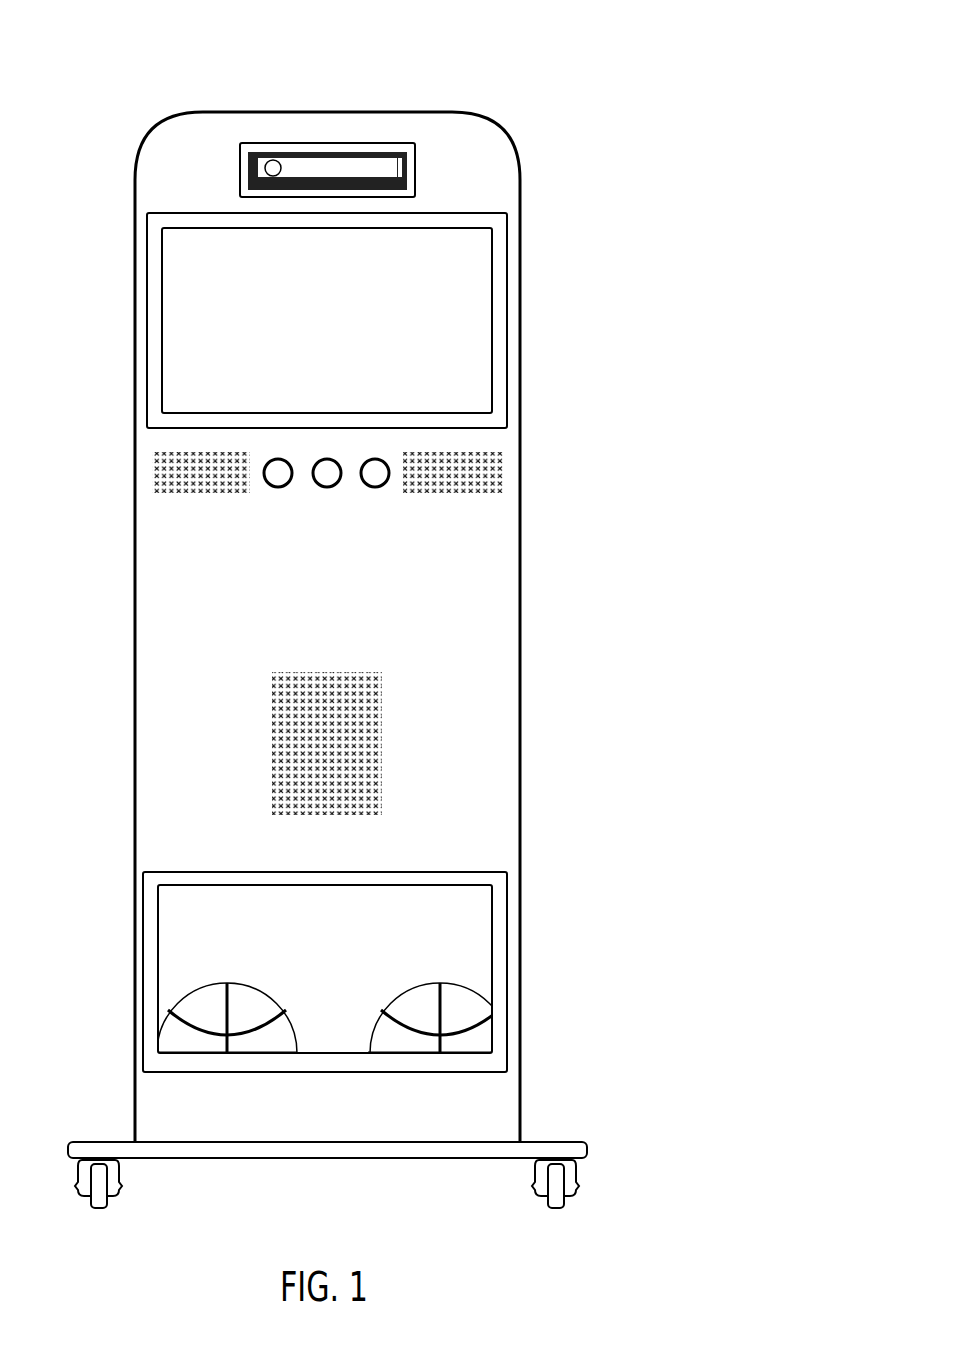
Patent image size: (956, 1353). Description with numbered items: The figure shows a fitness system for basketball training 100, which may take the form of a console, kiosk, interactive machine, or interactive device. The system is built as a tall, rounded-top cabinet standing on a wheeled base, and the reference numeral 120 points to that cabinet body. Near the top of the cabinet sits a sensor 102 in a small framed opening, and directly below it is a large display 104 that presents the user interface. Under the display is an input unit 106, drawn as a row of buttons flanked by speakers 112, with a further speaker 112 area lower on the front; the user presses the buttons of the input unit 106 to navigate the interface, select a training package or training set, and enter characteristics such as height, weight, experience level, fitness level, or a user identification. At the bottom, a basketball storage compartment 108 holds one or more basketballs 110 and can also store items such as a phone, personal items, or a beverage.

The fitness system for basketball training 100 is at (370, 607).
The sensor 102 is at (293, 163).
The display 104 is at (462, 328).
The input unit 106 is at (340, 503).
The basketball storage compartment 108 is at (497, 920).
The basketballs 110 is at (463, 1015).
The speakers 112 is at (478, 468).
The housing 120 is at (463, 172).